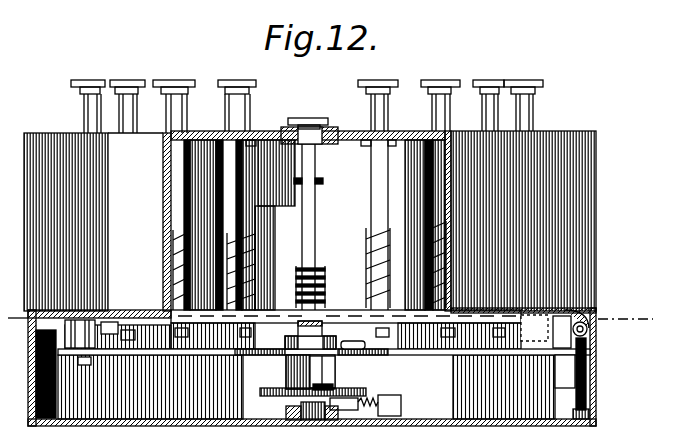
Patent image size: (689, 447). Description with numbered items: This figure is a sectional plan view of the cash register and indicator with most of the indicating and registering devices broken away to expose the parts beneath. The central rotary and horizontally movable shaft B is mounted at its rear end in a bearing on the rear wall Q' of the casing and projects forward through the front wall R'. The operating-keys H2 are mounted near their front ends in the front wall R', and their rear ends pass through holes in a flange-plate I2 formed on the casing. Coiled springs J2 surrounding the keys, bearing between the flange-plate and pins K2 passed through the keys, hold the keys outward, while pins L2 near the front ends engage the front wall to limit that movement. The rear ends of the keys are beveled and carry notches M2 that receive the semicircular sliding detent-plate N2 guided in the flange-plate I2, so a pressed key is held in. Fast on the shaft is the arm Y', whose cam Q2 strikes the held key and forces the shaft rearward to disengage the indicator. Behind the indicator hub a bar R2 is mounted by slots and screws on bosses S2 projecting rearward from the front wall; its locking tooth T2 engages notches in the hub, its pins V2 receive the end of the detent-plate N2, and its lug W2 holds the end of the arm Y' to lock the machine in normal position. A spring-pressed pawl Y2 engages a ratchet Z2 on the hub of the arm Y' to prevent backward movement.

The front wall R' is at (308, 122).
The pins L2 is at (290, 172).
The operating-keys H2 is at (234, 191).
The pins K2 is at (247, 226).
The coiled springs J2 is at (288, 279).
The notches M2 is at (372, 275).
The bosses S2 is at (88, 308).
The flange-plate I2 is at (225, 312).
The bar R2 is at (432, 347).
The arm Y' is at (308, 350).
The locking tooth or lug T2 is at (307, 365).
The cam Q2 is at (322, 373).
The ratchet Z2 is at (267, 388).
The shaft B is at (303, 414).
The pawl Y2 is at (393, 391).
The rear wall Q' is at (312, 433).
The detent-plate N2 is at (585, 303).
The pins V2 is at (564, 325).
The lug W2 is at (567, 352).